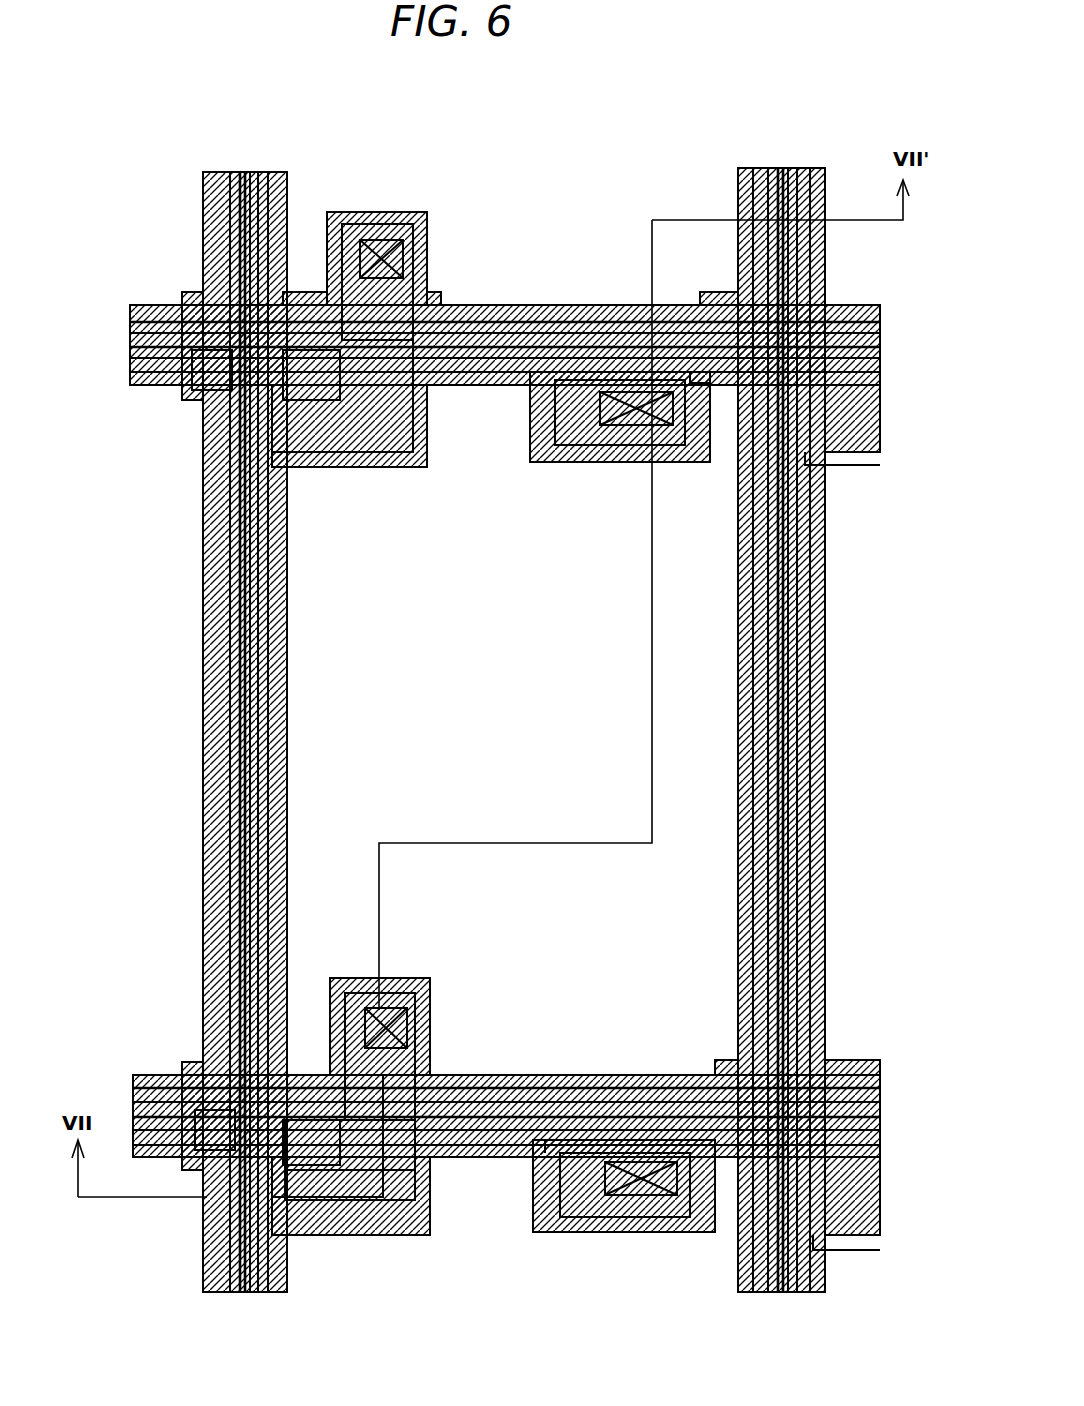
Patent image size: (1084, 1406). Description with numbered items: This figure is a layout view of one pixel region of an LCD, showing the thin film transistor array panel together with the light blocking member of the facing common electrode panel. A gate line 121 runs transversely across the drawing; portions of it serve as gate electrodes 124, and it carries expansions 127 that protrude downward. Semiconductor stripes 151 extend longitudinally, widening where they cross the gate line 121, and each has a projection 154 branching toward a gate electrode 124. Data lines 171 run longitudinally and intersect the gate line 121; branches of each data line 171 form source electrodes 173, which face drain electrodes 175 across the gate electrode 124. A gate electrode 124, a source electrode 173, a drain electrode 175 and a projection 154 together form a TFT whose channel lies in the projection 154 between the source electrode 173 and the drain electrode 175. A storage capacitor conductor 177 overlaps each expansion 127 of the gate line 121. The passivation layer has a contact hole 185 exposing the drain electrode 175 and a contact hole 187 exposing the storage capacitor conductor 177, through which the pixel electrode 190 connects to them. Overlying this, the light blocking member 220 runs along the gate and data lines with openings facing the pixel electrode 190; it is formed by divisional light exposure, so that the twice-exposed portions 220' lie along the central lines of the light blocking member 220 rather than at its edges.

The gate line 121 is at (535, 305).
The gate electrode 124 is at (440, 1140).
The expansion 127 is at (540, 448).
The semiconductor stripe 151 is at (790, 728).
The projection 154 is at (445, 1075).
The data line 171 is at (222, 618).
The source electrode 173 is at (357, 1210).
The drain electrode 175 is at (362, 995).
The storage capacitor conductor 177 is at (580, 448).
The contact hole 185 is at (438, 995).
The contact hole 187 is at (633, 398).
The pixel electrode 190 is at (625, 1092).
The light blocking member 220 is at (526, 730).
The twice-exposed portion 220' is at (503, 730).